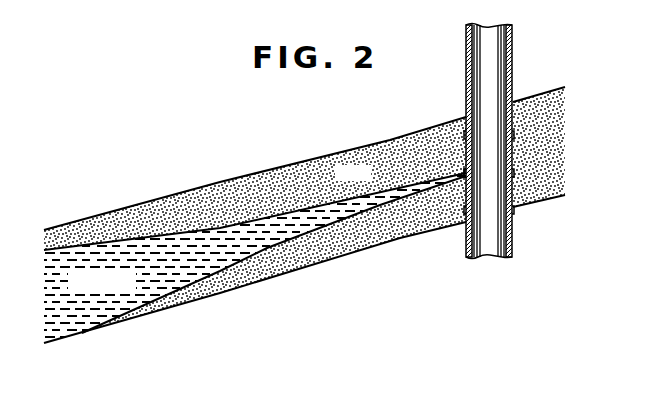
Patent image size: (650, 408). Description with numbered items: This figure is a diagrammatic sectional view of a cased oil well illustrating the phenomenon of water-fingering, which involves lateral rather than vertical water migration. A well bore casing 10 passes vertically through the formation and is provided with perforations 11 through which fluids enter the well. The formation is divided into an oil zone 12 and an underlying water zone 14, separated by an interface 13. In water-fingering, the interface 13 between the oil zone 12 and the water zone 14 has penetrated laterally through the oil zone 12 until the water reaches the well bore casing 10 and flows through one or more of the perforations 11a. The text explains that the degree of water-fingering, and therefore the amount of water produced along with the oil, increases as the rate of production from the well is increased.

The well bore casing 10 is at (466, 73).
The perforations 11 is at (512, 175).
The perforation 11a is at (466, 176).
The oil zone 12 is at (380, 152).
The interface 13 is at (136, 249).
The water zone 14 is at (90, 308).